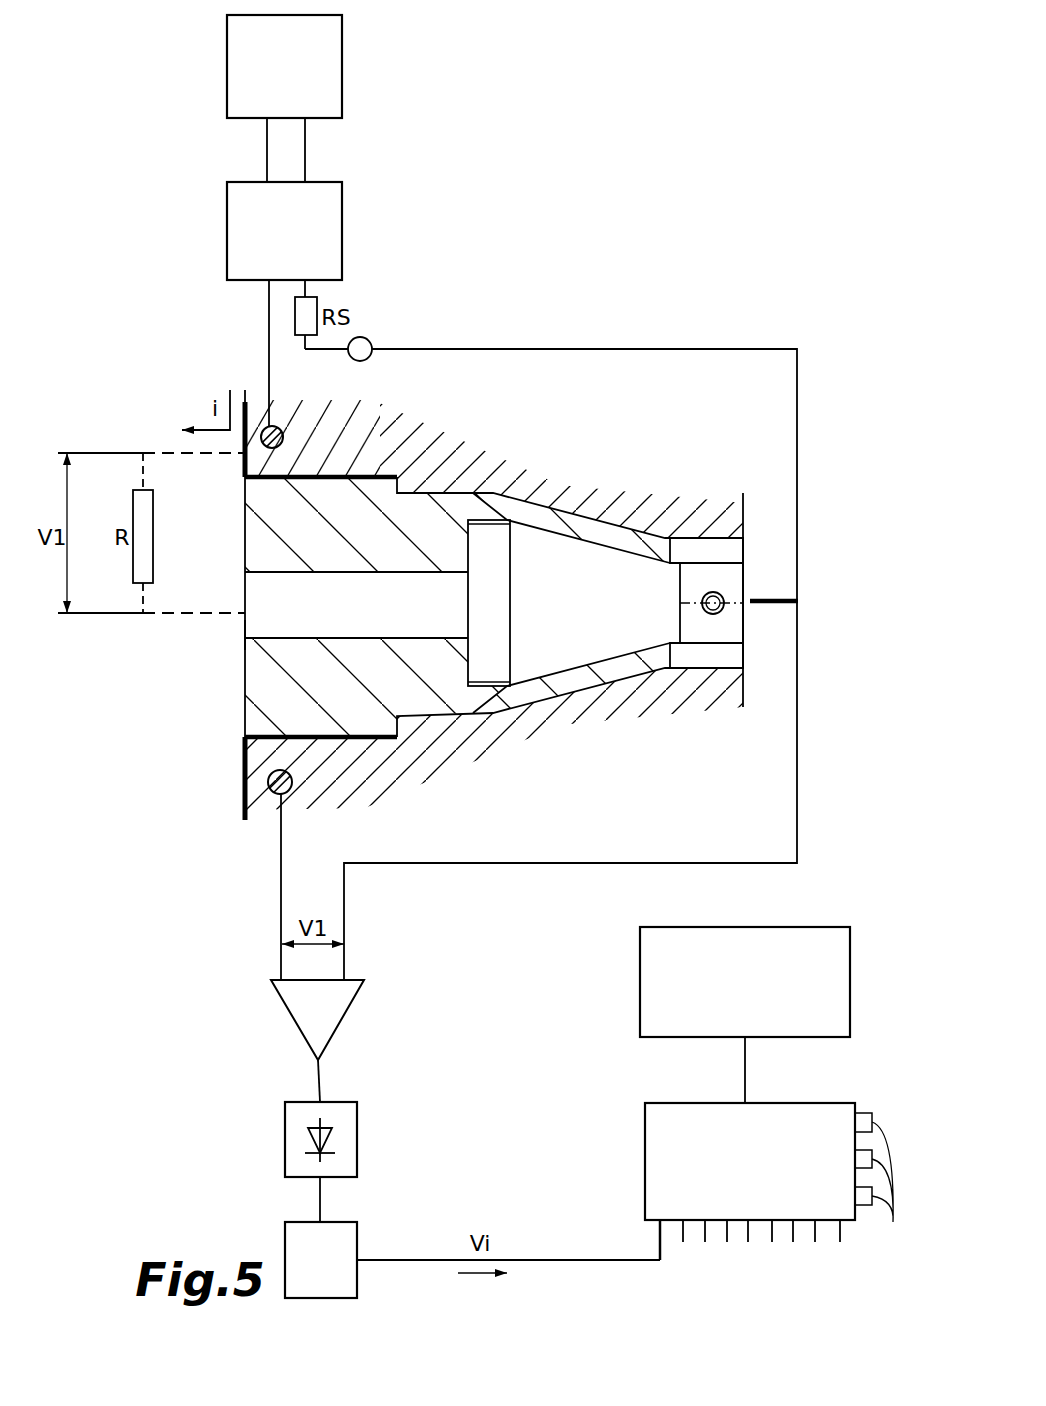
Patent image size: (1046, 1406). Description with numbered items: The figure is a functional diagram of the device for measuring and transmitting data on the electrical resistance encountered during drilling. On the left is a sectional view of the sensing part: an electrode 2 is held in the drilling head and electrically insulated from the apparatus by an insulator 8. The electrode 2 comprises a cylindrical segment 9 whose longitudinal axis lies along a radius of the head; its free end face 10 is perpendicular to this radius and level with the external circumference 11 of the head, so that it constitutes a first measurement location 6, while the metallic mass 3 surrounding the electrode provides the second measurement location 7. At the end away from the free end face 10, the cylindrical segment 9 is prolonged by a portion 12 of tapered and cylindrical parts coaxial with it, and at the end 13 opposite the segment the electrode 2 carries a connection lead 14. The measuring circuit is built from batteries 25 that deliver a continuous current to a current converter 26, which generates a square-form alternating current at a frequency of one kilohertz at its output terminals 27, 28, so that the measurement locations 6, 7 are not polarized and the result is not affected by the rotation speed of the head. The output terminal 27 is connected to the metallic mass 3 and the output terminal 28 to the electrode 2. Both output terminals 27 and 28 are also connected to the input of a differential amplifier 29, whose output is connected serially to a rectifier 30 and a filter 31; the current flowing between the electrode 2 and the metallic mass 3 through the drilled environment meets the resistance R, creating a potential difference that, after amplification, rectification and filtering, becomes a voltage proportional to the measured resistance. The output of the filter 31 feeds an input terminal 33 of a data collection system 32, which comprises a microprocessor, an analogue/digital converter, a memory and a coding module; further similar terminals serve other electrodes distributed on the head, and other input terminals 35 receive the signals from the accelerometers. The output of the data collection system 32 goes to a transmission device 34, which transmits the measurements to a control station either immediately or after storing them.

The electrode 2 is at (273, 615).
The metallic mass 3 is at (352, 440).
The measurement location 6 is at (242, 637).
The measurement location 7 is at (240, 770).
The insulator 8 is at (258, 537).
The cylindrical segment 9 is at (362, 628).
The free end face 10 is at (245, 583).
The external circumference 11 is at (243, 798).
The portion of tapered and cylindrical parts 12 is at (587, 645).
The end 13 is at (738, 615).
The connection lead 14 is at (767, 593).
The batteries 25 is at (270, 77).
The current converter 26 is at (270, 242).
The output terminal 27 is at (278, 423).
The output terminal 28 is at (368, 340).
The differential amplifier 29 is at (305, 1024).
The rectifier 30 is at (358, 1157).
The filter 31 is at (309, 1276).
The data collection system 32 is at (732, 1172).
The input terminal 33 is at (657, 1242).
The transmission device 34 is at (732, 996).
The input terminals 35 is at (878, 1182).